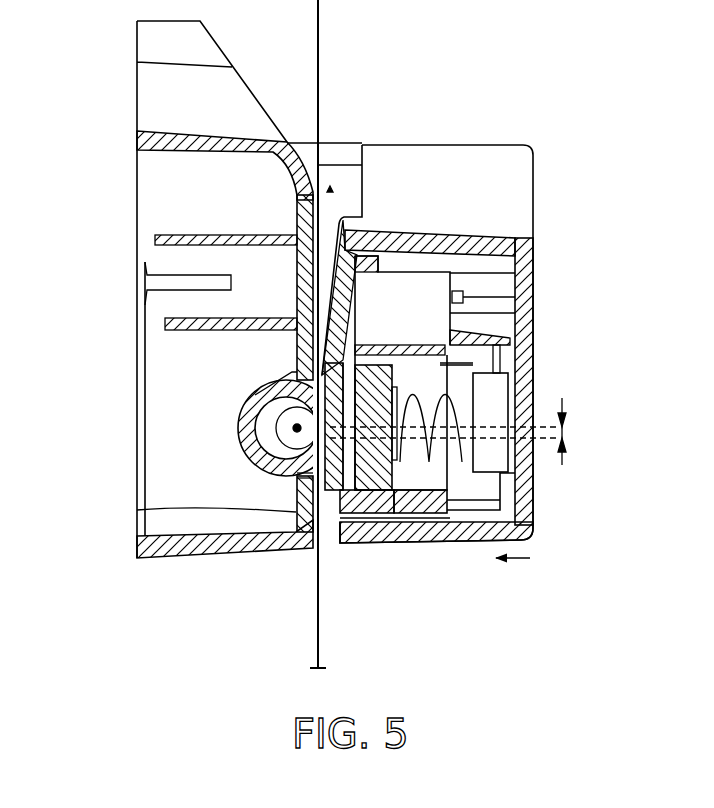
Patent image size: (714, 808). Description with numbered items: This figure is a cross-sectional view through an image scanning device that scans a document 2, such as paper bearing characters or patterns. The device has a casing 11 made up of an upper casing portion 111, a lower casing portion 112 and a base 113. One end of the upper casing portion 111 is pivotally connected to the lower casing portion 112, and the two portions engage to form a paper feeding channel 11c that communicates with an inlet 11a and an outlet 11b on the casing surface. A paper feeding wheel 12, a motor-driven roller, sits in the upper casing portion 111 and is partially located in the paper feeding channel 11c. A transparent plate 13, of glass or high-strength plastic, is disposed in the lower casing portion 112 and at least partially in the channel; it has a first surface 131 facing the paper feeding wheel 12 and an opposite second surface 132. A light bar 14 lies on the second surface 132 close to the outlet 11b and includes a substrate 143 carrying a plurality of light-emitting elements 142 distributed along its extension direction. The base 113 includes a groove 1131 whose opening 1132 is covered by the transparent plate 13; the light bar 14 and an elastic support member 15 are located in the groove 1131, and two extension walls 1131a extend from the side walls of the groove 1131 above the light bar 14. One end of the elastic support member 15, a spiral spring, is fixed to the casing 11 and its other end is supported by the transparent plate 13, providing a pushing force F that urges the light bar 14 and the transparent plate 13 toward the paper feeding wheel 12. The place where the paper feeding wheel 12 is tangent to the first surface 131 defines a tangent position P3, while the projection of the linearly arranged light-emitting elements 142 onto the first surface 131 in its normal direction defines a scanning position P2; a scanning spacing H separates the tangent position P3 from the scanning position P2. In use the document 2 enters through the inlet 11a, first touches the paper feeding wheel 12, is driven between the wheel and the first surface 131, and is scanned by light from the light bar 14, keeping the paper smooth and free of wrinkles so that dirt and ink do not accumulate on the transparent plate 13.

The document 2 is at (318, 69).
The casing 11 is at (65, 103).
The upper casing portion 111 is at (160, 124).
The lower casing portion 112 is at (383, 183).
The inlet 11a is at (332, 186).
The outlet 11b is at (328, 550).
The paper feeding channel 11c is at (297, 548).
The base 113 is at (525, 318).
The groove 1131 is at (415, 478).
The extension walls 1131a is at (312, 480).
The opening 1132 is at (298, 372).
The paper feeding wheel 12 is at (264, 455).
The transparent plate 13 is at (300, 512).
The first surface 131 is at (282, 385).
The second surface 132 is at (392, 372).
The light bar 14 is at (446, 593).
The light-emitting elements 142 is at (378, 508).
The substrate 143 is at (410, 508).
The elastic support member 15 is at (435, 396).
The scanning position P2 is at (319, 440).
The tangent position P3 is at (319, 430).
The scanning spacing H is at (458, 431).
The pushing force F is at (521, 559).